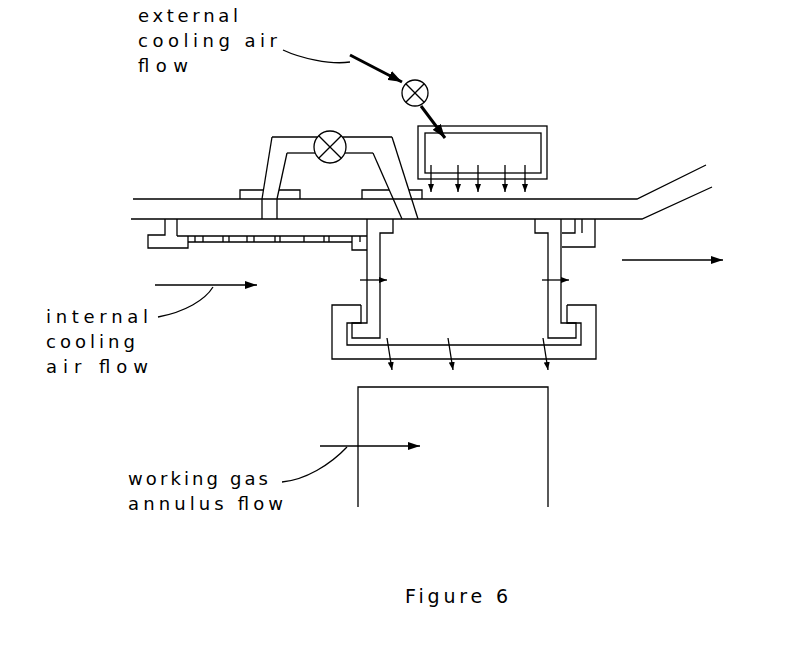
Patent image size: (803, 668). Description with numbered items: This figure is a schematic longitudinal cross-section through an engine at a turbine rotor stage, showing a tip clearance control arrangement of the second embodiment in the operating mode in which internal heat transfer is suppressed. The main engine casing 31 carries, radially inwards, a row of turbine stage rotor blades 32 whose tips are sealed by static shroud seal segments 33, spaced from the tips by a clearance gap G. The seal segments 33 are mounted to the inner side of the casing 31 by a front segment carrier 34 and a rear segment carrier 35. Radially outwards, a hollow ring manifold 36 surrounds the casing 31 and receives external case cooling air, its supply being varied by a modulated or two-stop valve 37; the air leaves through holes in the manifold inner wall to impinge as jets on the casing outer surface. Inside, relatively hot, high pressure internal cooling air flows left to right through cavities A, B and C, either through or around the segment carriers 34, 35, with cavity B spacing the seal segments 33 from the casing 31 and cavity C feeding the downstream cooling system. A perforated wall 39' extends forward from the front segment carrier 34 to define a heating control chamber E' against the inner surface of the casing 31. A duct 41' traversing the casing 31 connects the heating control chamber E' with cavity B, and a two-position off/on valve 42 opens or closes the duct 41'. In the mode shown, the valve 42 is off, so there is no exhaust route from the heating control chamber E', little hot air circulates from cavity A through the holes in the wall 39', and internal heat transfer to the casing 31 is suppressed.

The main engine casing 31 is at (163, 208).
The turbine stage rotor blades 32 is at (470, 490).
The static shroud seal segments 33 is at (562, 355).
The front segment carrier 34 is at (372, 307).
The rear segment carrier 35 is at (555, 305).
The hollow ring manifold 36 is at (473, 128).
The modulated or two-stop valve 37 is at (415, 80).
The wall 39' is at (212, 244).
The duct 41' is at (308, 167).
The two-position off/on valve 42 is at (319, 134).
The heating control chamber E' is at (188, 184).
The cavity A is at (304, 288).
The cavity B is at (467, 297).
The cavity C is at (689, 298).
The clearance gap G is at (363, 373).